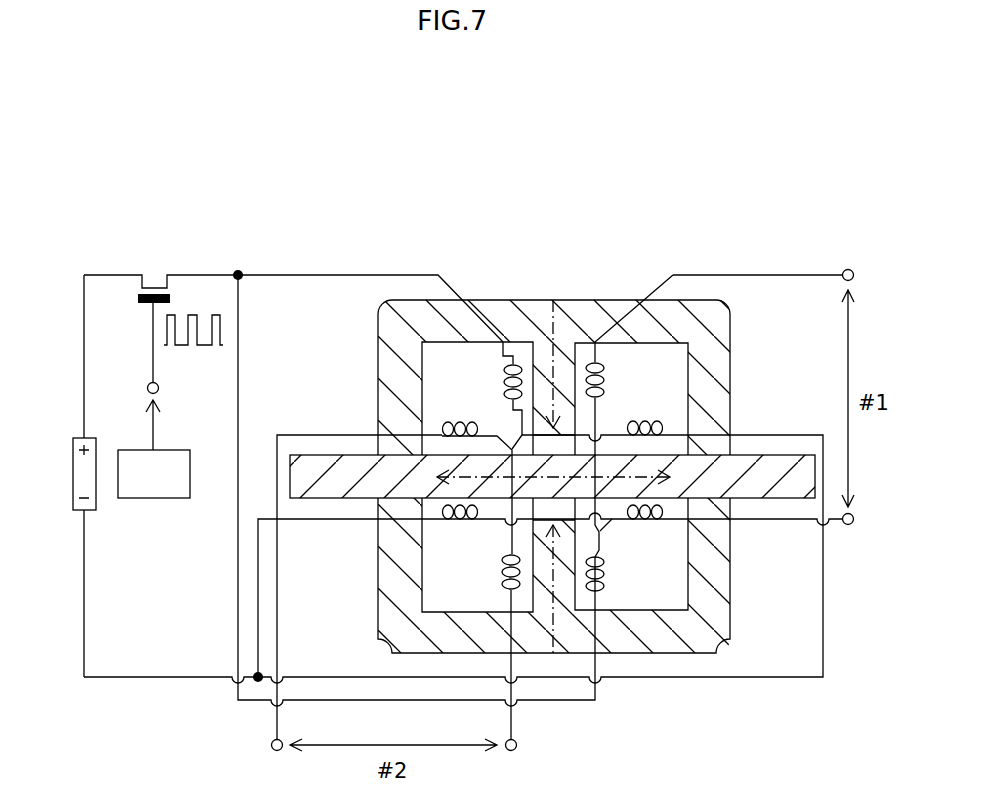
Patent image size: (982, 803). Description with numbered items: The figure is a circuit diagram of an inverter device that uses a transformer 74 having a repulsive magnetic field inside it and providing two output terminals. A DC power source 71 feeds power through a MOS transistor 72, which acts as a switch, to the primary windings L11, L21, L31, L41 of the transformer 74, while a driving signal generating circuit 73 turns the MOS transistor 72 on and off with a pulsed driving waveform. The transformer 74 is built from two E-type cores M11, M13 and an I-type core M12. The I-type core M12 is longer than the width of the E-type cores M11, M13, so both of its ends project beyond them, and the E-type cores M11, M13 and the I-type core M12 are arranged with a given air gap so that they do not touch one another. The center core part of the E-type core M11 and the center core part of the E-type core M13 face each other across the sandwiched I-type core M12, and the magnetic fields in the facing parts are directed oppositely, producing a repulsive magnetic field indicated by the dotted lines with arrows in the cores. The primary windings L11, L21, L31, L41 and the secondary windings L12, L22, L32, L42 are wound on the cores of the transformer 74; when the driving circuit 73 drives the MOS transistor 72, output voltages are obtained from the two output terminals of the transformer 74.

The DC power source 71 is at (84, 448).
The MOS transistor 72 is at (152, 279).
The driving signal generating circuit 73 is at (157, 500).
The transformer 74 is at (691, 268).
The E-type core M11 is at (558, 320).
The I-type core M12 is at (766, 465).
The E-type core M13 is at (555, 642).
The primary winding L11 is at (503, 378).
The secondary winding L12 is at (600, 382).
The primary winding L21 is at (605, 578).
The secondary winding L22 is at (500, 578).
The primary winding L31 is at (652, 422).
The secondary winding L32 is at (648, 527).
The primary winding L41 is at (465, 528).
The secondary winding L42 is at (462, 422).